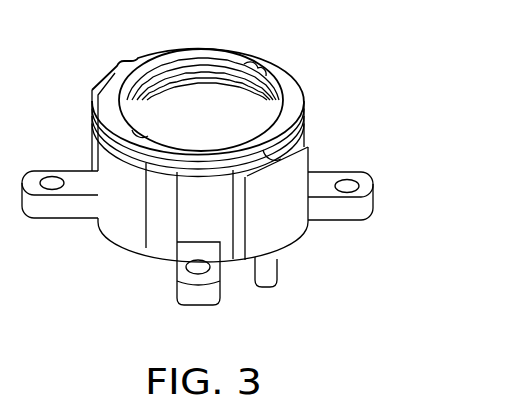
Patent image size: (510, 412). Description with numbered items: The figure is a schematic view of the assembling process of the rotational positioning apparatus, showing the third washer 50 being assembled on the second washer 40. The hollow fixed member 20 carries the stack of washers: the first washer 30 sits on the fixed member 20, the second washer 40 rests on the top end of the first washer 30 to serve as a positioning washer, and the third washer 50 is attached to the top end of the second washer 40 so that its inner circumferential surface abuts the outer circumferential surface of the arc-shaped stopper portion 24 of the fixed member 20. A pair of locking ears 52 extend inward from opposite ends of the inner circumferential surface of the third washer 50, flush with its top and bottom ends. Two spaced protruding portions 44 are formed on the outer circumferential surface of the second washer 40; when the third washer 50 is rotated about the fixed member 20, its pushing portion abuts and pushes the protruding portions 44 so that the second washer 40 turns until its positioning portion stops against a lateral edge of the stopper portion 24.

The fixed member 20 is at (148, 232).
The stopper portion 24 is at (159, 98).
The first washer 30 is at (174, 233).
The second washer 40 is at (177, 170).
The protruding portions 44 is at (283, 76).
The third washer 50 is at (290, 97).
The locking ears 52 is at (280, 160).